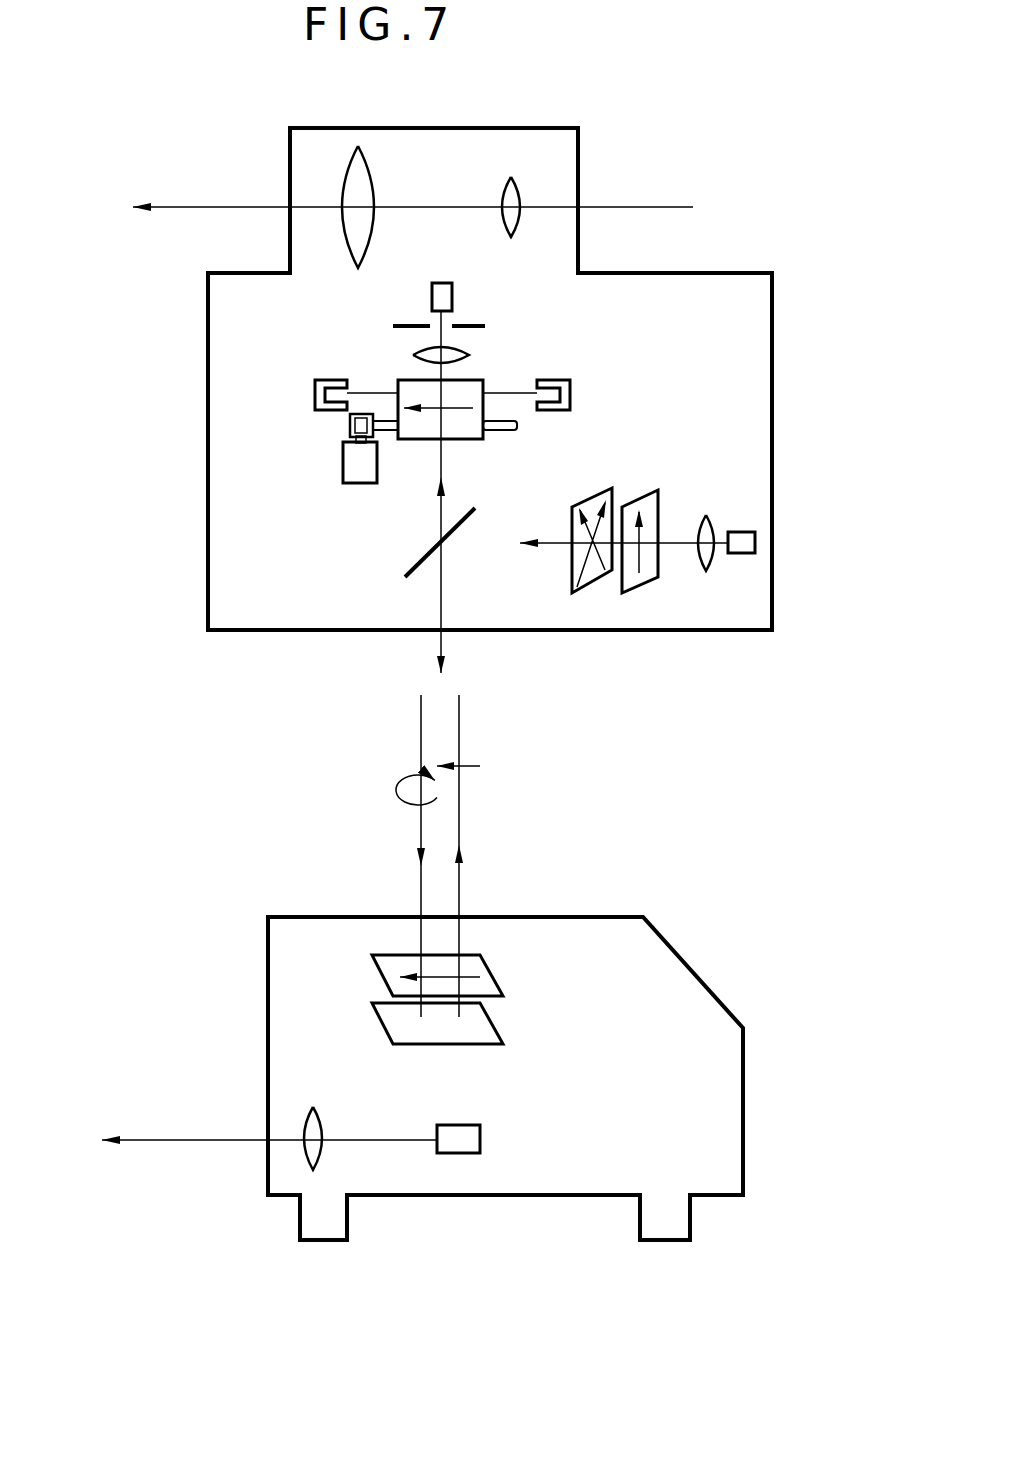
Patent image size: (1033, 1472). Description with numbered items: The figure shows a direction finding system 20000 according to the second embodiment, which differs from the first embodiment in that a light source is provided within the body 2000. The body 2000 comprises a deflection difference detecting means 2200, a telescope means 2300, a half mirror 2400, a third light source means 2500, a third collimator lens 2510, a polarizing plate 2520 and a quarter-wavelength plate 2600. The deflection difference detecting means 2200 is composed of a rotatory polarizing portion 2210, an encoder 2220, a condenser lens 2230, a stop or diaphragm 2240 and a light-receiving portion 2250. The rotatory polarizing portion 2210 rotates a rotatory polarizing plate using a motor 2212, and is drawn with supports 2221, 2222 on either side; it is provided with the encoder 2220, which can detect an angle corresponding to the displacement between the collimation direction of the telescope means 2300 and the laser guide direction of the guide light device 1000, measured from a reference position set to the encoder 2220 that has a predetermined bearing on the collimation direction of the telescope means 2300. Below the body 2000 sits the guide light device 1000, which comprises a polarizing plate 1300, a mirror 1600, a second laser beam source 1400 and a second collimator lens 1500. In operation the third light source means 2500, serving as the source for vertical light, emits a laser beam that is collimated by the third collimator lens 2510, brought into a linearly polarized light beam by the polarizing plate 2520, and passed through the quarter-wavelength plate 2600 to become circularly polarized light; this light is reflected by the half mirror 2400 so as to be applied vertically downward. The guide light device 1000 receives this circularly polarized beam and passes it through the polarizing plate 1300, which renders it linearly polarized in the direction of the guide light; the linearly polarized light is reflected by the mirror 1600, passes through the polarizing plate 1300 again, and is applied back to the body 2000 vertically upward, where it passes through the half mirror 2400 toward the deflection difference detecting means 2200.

The telescope means 2300 is at (438, 167).
The deflection difference detecting means 2200 is at (540, 285).
The light-receiving portion 2250 is at (492, 273).
The stop or diaphragm 2240 is at (485, 324).
The condenser lens 2230 is at (468, 355).
The encoder 2220 is at (390, 372).
The left support 2221 is at (315, 397).
The right support 2222 is at (573, 395).
The rotatory polarizing portion 2210 is at (475, 439).
The motor 2212 is at (343, 460).
The half mirror 2400 is at (417, 563).
The ¼-wavelength plate 2600 is at (570, 568).
The polarizing plate 2520 is at (648, 498).
The third collimator lens 2510 is at (700, 562).
The third light source means 2500 is at (752, 531).
The body 2000 is at (713, 698).
The guide light device 1000 is at (773, 928).
The polarizing plate 1300 is at (483, 985).
The mirror 1600 is at (480, 1033).
The second collimator lens 1500 is at (322, 1123).
The second laser beam source 1400 is at (480, 1140).
The direction finding system 20000 is at (262, 1227).